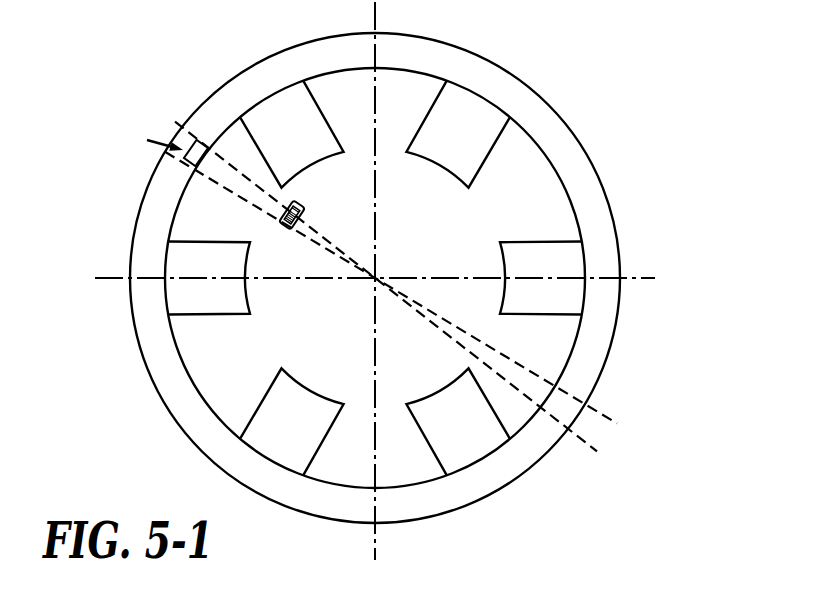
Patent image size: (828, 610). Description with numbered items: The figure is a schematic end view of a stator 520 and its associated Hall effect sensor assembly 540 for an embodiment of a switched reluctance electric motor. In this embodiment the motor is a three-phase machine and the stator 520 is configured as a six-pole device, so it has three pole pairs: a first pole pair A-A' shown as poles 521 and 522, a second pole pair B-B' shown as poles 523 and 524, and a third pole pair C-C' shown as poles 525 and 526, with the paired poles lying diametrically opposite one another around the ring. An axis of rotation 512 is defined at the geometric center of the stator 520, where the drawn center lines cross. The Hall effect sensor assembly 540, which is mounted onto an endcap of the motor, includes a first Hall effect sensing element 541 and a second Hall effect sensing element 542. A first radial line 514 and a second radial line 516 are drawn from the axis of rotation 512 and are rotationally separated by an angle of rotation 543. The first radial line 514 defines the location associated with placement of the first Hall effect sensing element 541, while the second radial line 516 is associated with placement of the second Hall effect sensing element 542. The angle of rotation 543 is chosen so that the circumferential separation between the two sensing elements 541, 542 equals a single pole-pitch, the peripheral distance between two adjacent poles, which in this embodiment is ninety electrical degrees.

The stator 520 is at (530, 64).
The axis of rotation 512 is at (372, 281).
The pole A 521 is at (313, 144).
The pole A' 522 is at (476, 427).
The pole B 523 is at (477, 144).
The pole B' 524 is at (315, 427).
The pole C 525 is at (564, 271).
The pole C' 526 is at (232, 309).
The Hall effect sensor assembly 540 is at (281, 233).
The first Hall effect sensing element 541 is at (304, 222).
The second Hall effect sensing element 542 is at (301, 206).
The angle of rotation 543 is at (180, 147).
The first radial line 514 is at (600, 411).
The second radial line 516 is at (582, 438).